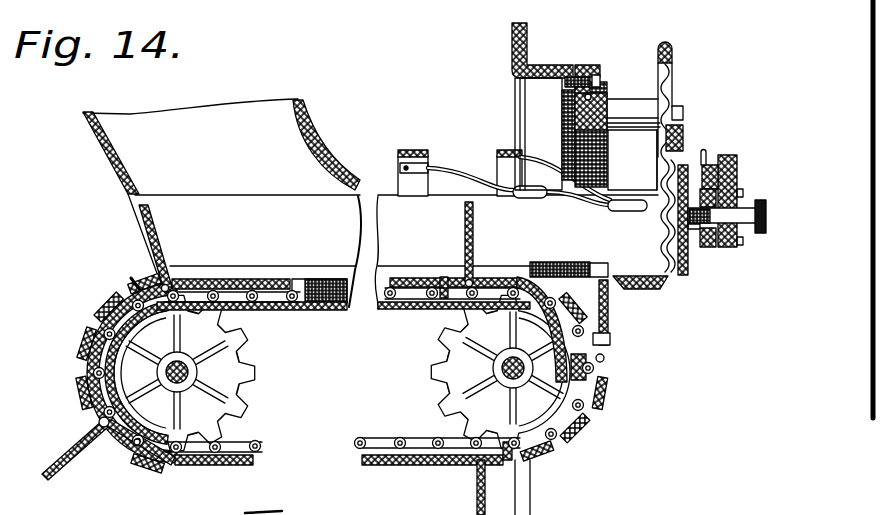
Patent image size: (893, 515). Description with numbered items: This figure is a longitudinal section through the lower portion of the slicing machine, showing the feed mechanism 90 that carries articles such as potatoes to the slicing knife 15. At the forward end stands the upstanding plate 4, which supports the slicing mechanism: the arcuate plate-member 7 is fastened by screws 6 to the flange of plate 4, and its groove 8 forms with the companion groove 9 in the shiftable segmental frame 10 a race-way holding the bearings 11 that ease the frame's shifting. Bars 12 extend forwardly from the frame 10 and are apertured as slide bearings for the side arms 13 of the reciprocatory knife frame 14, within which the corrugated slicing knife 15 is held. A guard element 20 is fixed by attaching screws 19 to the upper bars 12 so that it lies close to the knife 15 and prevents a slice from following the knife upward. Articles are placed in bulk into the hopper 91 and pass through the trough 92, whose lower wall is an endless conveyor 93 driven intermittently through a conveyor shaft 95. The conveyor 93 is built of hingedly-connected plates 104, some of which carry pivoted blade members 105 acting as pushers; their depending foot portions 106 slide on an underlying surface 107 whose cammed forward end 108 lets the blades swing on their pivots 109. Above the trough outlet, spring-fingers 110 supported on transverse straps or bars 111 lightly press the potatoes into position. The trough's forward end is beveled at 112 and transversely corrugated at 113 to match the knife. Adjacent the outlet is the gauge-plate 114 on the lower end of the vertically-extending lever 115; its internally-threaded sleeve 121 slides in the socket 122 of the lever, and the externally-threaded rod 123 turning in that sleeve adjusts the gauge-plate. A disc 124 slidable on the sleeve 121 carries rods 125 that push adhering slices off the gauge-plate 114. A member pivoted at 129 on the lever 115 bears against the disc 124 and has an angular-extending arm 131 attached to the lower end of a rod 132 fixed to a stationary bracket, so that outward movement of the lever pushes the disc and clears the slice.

The upstanding plate 4 is at (528, 43).
The screws 6 is at (598, 92).
The arcuate plate-member 7 is at (583, 72).
The groove 8 is at (603, 86).
The companion groove 9 is at (607, 98).
The shiftable segmental frame 10 is at (632, 160).
The bearings 11 is at (573, 118).
The bars 12 is at (647, 108).
The side arms 13 is at (674, 52).
The reciprocatory knife frame 14 is at (675, 73).
The slicing knife 15 is at (677, 103).
The attaching screws 19 is at (686, 110).
The guard element 20 is at (685, 127).
The feed mechanism 90 is at (506, 267).
The hopper 91 is at (318, 141).
The trough 92 is at (244, 250).
The endless conveyor 93 is at (290, 277).
The conveyor shaft 95 is at (527, 371).
The plates 104 is at (260, 280).
The pivoted blade members 105 is at (165, 246).
The depending foot portions 106 is at (638, 355).
The underlying surface 107 is at (313, 311).
The cam 108 is at (588, 346).
The pivots 109 is at (100, 413).
The spring-fingers 110 is at (537, 199).
The straps or bars 111 is at (500, 153).
The bevel 112 is at (668, 285).
The corrugations 113 is at (668, 250).
The gauge-plate 114 is at (689, 270).
The vertically-extending lever 115 is at (738, 170).
The internally-threaded sleeve 121 is at (677, 227).
The socket 122 is at (717, 202).
The externally-threaded rod 123 is at (739, 216).
The disc 124 is at (708, 247).
The rods 125 is at (743, 241).
The pivot 129 is at (723, 156).
The angular-extending arm 131 is at (700, 172).
The rod 132 is at (703, 152).